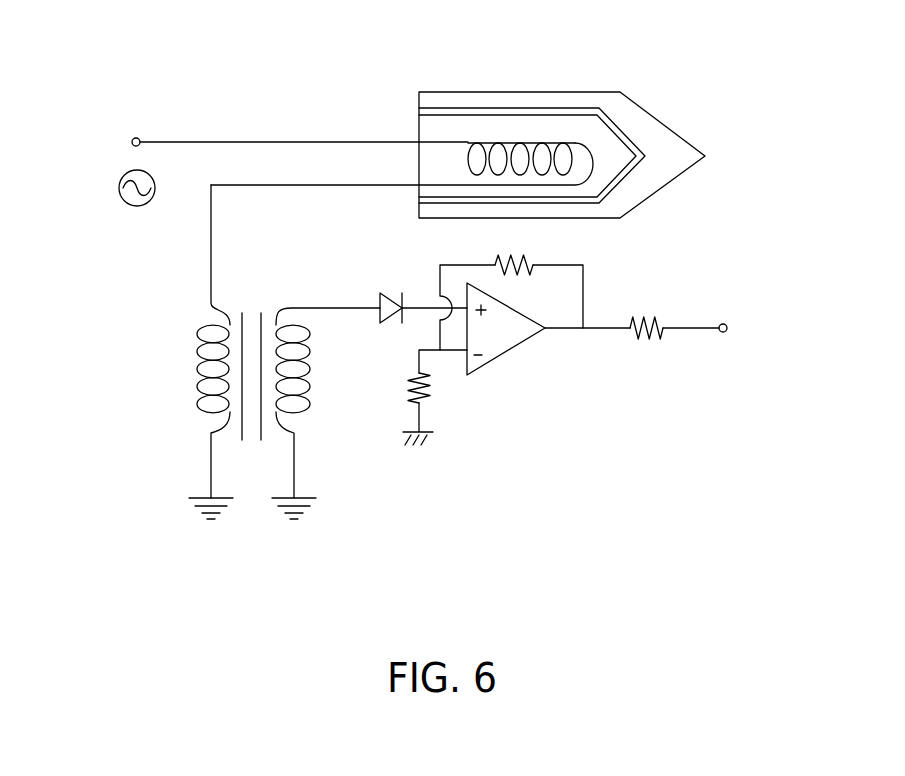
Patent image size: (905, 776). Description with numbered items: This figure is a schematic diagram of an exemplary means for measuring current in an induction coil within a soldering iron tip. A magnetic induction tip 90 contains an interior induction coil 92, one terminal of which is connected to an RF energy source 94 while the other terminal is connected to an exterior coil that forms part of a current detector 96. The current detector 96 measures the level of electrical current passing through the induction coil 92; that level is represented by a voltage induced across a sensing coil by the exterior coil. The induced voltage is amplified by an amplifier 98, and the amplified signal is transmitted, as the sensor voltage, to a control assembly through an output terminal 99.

The magnetic induction tip 90 is at (578, 92).
The interior induction coil 92 is at (462, 142).
The RF energy source 94 is at (85, 140).
The current detector 96 is at (457, 518).
The amplifier 98 is at (503, 353).
The output terminal 99 is at (692, 328).